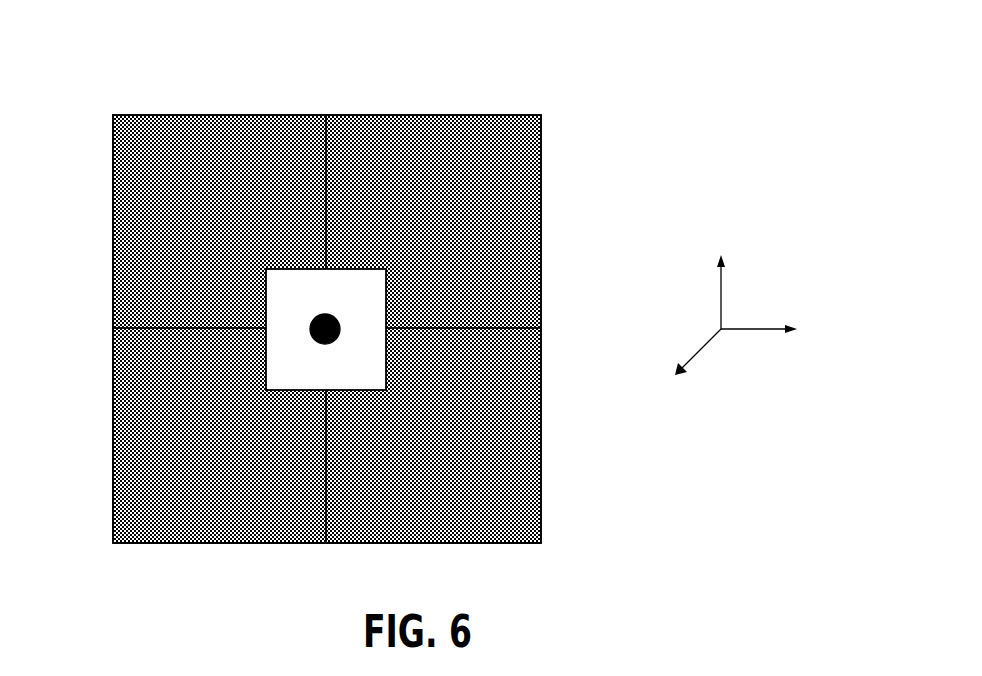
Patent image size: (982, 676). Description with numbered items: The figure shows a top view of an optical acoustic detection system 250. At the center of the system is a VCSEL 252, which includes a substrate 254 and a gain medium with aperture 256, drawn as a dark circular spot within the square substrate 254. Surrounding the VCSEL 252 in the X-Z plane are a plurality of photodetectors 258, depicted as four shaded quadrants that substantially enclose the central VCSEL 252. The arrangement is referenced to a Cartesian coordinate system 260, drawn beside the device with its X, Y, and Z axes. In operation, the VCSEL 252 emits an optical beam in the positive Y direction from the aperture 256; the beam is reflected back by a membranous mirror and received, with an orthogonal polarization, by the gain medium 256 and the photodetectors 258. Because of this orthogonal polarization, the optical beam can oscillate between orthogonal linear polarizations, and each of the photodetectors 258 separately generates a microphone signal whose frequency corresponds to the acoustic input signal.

The optical acoustic detection system 250 is at (284, 289).
The VCSEL 252 is at (389, 303).
The substrate 254 is at (372, 376).
The gain medium with aperture 256 is at (326, 314).
The photodetectors 258 is at (235, 231).
The Cartesian coordinate system 260 is at (766, 222).